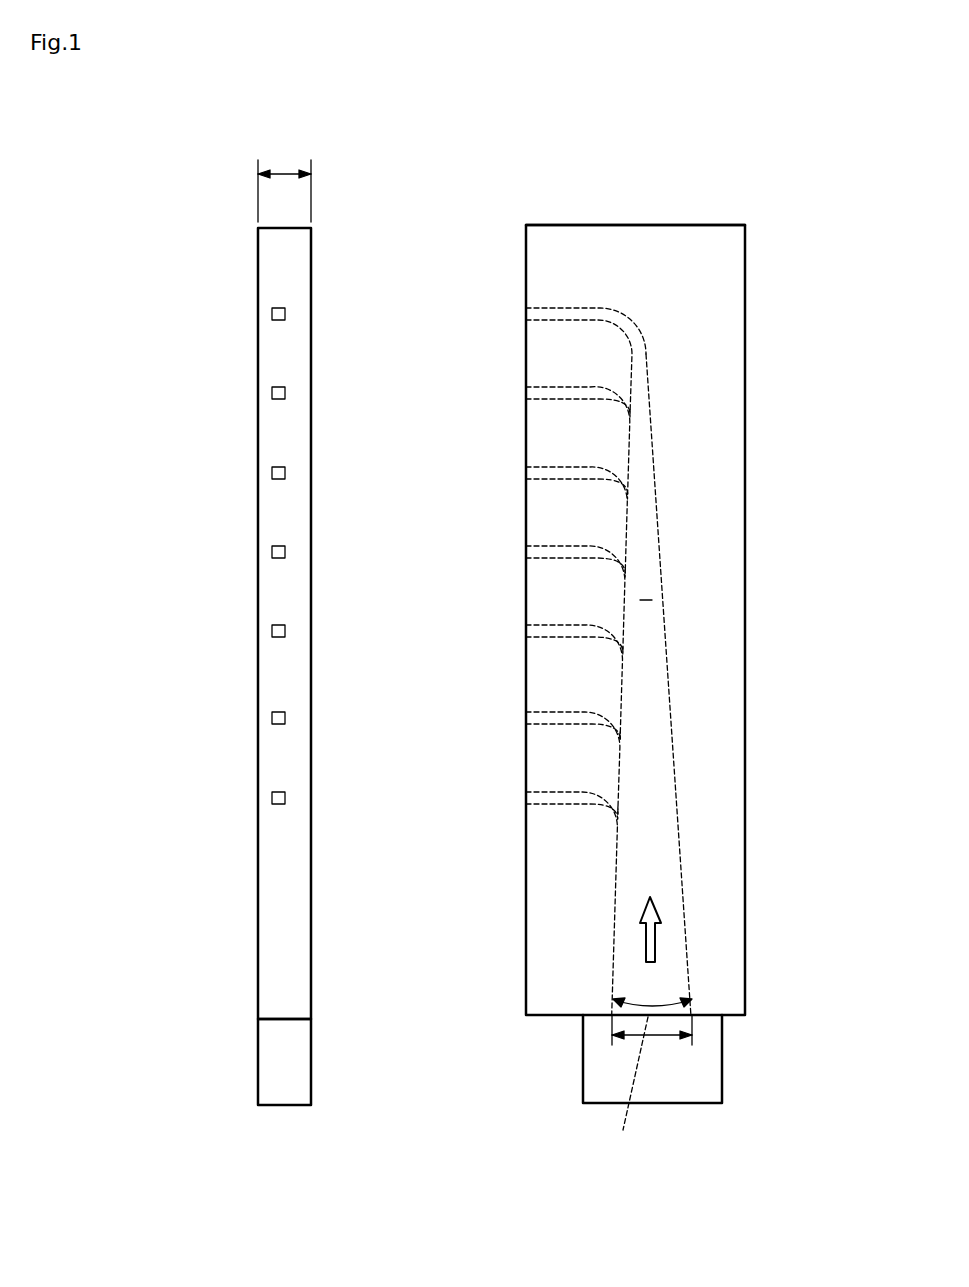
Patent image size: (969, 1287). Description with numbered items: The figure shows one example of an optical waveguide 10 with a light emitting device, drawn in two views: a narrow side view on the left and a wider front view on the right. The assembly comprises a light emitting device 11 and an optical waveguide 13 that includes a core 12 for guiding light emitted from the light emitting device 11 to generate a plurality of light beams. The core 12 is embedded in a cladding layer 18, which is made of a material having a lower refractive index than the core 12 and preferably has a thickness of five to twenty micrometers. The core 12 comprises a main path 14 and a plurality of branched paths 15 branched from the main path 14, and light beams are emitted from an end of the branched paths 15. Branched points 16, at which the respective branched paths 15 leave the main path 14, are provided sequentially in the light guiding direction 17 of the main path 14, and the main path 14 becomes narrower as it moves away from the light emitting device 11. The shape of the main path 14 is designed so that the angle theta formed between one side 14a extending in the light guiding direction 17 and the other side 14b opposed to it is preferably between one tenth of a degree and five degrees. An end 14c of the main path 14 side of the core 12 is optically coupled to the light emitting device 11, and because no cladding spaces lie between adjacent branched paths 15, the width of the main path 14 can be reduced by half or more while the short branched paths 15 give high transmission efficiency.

The optical waveguide with a light emitting device 10 is at (375, 184).
The light emitting device 11 is at (258, 1105).
The core 12 is at (646, 607).
The optical waveguide 13 is at (745, 225).
The main path 14 is at (650, 855).
The one side 14a is at (614, 890).
The other side 14b is at (683, 890).
The end of the main path 14c is at (630, 1090).
The branched paths 15 is at (272, 309).
The branched points 16 is at (630, 415).
The light guiding direction 17 is at (655, 945).
The cladding layer 18 is at (290, 925).